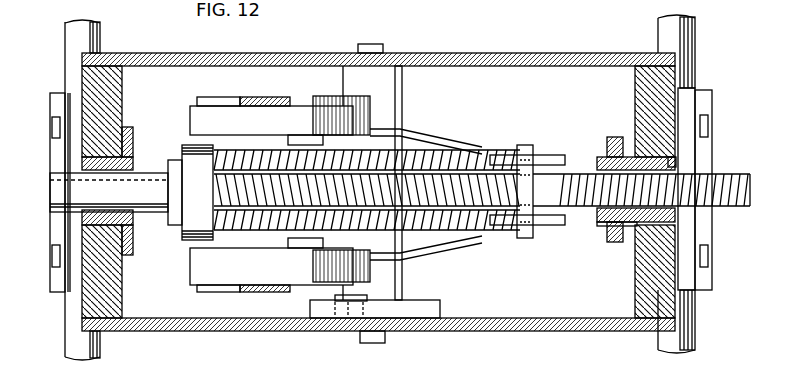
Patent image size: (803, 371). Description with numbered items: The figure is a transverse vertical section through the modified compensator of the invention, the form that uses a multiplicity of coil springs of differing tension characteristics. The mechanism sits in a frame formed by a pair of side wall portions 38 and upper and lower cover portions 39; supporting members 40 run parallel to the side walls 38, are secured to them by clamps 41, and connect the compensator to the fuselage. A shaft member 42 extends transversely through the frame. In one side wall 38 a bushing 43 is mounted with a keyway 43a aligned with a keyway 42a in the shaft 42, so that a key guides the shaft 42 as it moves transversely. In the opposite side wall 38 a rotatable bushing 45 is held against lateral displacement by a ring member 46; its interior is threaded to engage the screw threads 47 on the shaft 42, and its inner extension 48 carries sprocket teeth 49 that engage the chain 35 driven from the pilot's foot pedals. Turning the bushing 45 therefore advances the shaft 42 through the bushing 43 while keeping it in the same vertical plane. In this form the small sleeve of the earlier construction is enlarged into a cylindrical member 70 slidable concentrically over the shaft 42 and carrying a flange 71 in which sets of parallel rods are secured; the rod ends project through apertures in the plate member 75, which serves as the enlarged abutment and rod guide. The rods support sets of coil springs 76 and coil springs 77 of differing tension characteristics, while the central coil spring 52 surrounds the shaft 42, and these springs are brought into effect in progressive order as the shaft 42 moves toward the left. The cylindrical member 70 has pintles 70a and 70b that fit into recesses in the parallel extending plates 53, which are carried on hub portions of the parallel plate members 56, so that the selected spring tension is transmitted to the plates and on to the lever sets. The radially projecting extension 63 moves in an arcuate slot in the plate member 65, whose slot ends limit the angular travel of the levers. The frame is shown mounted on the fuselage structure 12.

The machine frame 12 is at (309, 355).
The chain 35 is at (607, 147).
The side wall portions 38 is at (104, 92).
The upper and lower cover portions 39 is at (505, 60).
The supporting members 40 is at (88, 44).
The clamps 41 is at (50, 126).
The shaft member 42 is at (86, 199).
The keyway 42a is at (50, 181).
The bushing 43 is at (112, 224).
The keyway 43a is at (116, 170).
The rotatable bushing 45 is at (620, 243).
The ring member 46 is at (668, 163).
The screw threads 47 is at (749, 186).
The inner extension 48 is at (597, 218).
The sprocket teeth 49 is at (620, 245).
The coil spring 52 is at (520, 176).
The parallel extending plates 53 is at (271, 183).
The parallel plate members 56 is at (222, 100).
The radially projecting extension 63 is at (358, 294).
The plate member 65 is at (426, 310).
The cylindrical member 70 is at (177, 226).
The pintle 70a is at (305, 132).
The pintle 70b is at (315, 250).
The flange 71 is at (173, 160).
The plate member 75 is at (528, 150).
The coil springs 76 is at (478, 232).
The coil springs 77 is at (477, 150).